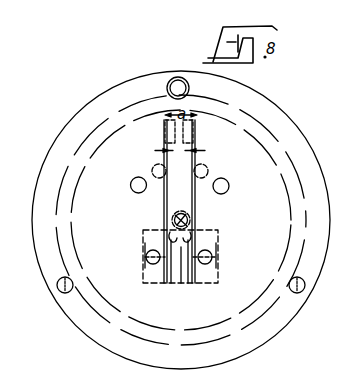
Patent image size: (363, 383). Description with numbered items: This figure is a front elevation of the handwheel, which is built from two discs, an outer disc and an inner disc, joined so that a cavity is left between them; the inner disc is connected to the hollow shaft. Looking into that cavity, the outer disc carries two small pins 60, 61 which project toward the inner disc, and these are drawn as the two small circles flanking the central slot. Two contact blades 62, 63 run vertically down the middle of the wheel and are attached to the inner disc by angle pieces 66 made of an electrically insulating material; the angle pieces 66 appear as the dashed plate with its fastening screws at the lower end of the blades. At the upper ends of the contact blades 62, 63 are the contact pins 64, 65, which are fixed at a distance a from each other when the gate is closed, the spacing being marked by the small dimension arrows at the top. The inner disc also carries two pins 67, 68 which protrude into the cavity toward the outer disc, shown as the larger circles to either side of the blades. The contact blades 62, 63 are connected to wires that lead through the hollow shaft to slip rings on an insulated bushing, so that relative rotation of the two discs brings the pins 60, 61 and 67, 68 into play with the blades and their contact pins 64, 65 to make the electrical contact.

The pin 60 is at (153, 166).
The pin 61 is at (207, 167).
The contact blade 62 is at (163, 193).
The contact blade 63 is at (195, 193).
The contact pin 64 is at (165, 130).
The contact pin 65 is at (196, 131).
The angle piece 66 is at (220, 263).
The pin 67 is at (131, 189).
The pin 68 is at (229, 186).